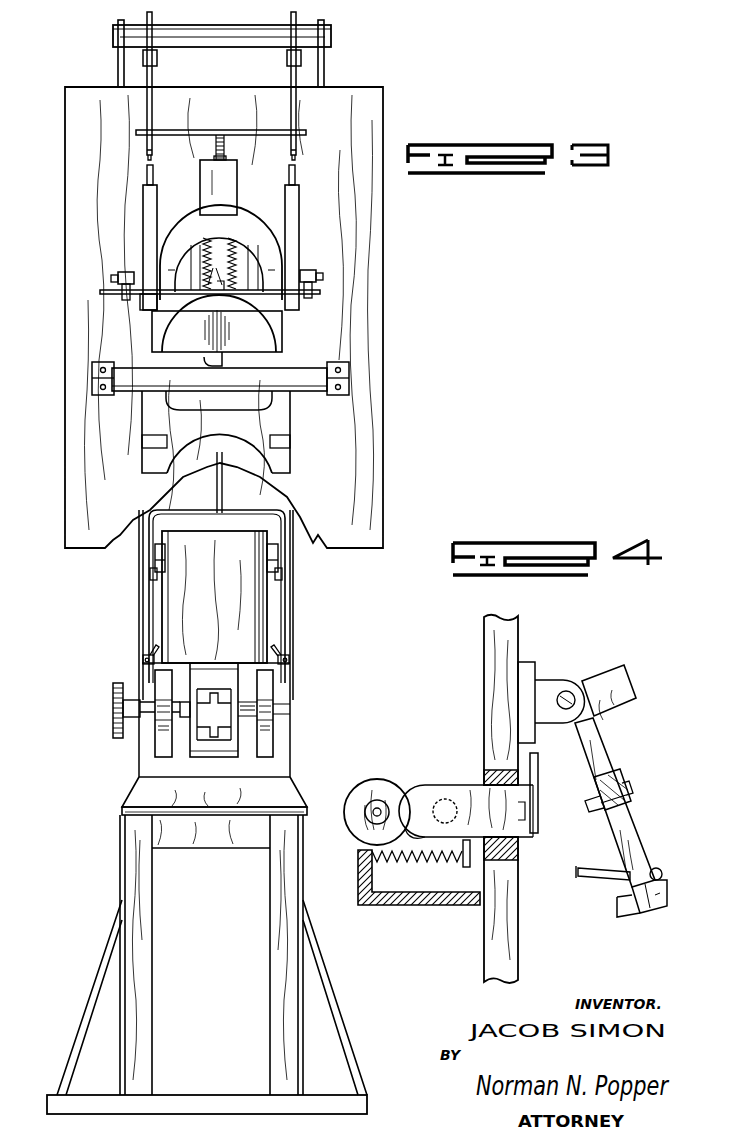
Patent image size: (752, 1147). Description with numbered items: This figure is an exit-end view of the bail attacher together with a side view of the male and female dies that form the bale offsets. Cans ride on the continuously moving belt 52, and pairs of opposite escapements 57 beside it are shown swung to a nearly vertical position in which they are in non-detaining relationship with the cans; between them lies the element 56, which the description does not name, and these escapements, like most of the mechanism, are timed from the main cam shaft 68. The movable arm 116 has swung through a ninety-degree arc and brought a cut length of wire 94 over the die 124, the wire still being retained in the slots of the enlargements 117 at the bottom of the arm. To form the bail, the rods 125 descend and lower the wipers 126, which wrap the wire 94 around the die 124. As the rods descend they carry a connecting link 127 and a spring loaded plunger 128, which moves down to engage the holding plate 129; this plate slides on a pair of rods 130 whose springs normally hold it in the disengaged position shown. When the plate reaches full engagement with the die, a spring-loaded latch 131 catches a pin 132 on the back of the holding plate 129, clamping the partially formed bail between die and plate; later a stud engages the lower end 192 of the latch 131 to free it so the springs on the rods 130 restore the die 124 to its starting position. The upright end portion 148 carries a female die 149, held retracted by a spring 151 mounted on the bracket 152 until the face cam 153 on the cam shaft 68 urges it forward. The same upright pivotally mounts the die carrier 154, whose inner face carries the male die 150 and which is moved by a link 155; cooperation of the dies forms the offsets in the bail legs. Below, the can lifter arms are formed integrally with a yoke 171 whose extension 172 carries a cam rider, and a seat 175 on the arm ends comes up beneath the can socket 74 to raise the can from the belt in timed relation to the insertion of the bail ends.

In FIG. 3, the belt 52 is at (222, 757).
In FIG. 3, the spool 56 is at (232, 648).
In FIG. 3, the escapements 57 is at (146, 649).
In FIG. 4, the cam shaft 68 is at (383, 806).
In FIG. 3, the socket 74 is at (155, 564).
In FIG. 3, the wire 94 is at (130, 291).
In FIG. 3, the movable arm 116 is at (137, 270).
In FIG. 3, the enlargements 117 is at (120, 290).
In FIG. 3, the die 124 is at (255, 348).
In FIG. 3, the rods 125 is at (152, 79).
In FIG. 3, the wipers 126 is at (146, 226).
In FIG. 3, the connecting link 127 is at (213, 113).
In FIG. 3, the spring loaded plunger 128 is at (225, 146).
In FIG. 3, the holding plate 129 is at (212, 183).
In FIG. 3, the rods 130 is at (236, 276).
In FIG. 3, the spring-loaded latch 131 is at (205, 300).
In FIG. 3, the pin 132 is at (196, 216).
In FIG. 3, the upright end portion 148 is at (78, 149).
In FIG. 4, the upright end portion 148 is at (513, 635).
In FIG. 4, the female die 149 is at (460, 803).
In FIG. 4, the male die 150 is at (596, 812).
In FIG. 4, the spring 151 is at (443, 866).
In FIG. 4, the bracket 152 is at (441, 908).
In FIG. 4, the face cam 153 is at (370, 784).
In FIG. 4, the die carrier 154 is at (602, 754).
In FIG. 4, the link 155 is at (608, 874).
In FIG. 3, the yoke 171 is at (278, 521).
In FIG. 3, the extension 172 is at (222, 497).
In FIG. 3, the seat 175 is at (157, 574).
In FIG. 3, the lower end 192 is at (204, 362).